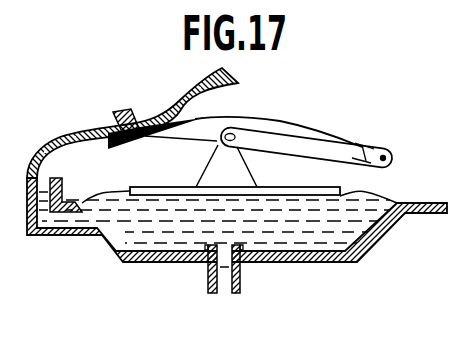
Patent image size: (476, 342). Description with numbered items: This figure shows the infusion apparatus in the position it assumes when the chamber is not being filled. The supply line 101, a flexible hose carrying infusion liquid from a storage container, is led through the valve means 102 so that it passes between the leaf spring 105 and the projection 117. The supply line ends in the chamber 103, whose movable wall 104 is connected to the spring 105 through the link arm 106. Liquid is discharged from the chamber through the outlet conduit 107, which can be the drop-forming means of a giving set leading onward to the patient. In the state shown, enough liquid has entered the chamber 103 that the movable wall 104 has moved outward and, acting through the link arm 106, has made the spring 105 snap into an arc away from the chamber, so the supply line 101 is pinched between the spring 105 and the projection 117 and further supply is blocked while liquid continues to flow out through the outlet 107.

The supply line 101 is at (238, 81).
The valve means 102 is at (120, 137).
The chamber 103 is at (362, 228).
The movable wall 104 is at (390, 199).
The leaf spring 105 is at (301, 122).
The link arm 106 is at (358, 142).
The outlet conduit 107 is at (226, 293).
The projection 117 is at (117, 110).